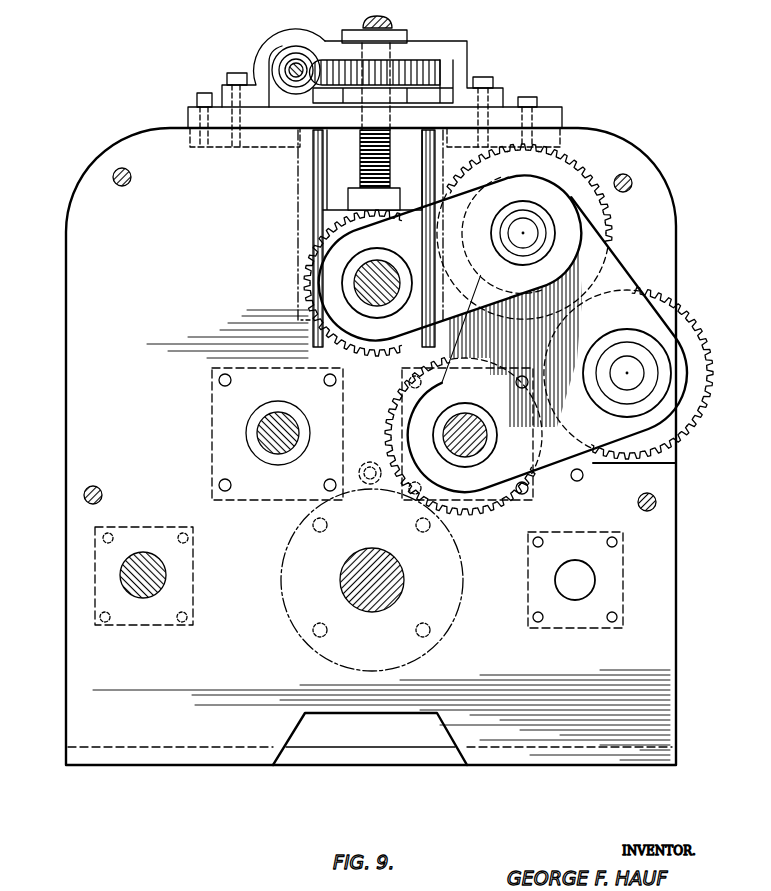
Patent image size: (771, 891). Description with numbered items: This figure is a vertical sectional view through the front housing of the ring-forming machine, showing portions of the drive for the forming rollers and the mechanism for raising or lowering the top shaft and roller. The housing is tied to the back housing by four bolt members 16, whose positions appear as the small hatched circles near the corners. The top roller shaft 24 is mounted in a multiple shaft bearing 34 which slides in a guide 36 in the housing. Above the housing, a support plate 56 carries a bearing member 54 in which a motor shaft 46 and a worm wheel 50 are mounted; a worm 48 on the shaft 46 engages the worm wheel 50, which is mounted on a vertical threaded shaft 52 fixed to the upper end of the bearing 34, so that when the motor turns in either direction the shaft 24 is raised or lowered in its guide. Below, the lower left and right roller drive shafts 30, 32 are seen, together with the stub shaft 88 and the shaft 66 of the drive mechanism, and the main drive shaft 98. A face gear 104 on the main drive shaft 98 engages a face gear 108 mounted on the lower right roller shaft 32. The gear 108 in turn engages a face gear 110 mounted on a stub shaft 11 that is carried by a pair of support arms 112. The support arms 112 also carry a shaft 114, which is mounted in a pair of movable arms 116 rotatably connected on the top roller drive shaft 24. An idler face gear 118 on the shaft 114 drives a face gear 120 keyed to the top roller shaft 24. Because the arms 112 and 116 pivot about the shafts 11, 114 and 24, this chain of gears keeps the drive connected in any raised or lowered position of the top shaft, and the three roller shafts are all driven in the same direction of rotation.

The stub shaft 11 is at (612, 371).
The bolt members 16 is at (120, 186).
The top roller shaft 24 is at (376, 268).
The drive shaft 30 is at (273, 453).
The drive shaft 32 is at (467, 452).
The shaft bearing 34 is at (338, 209).
The guide 36 is at (316, 183).
The motor shaft 46 is at (272, 63).
The worm 48 is at (282, 52).
The worm wheel 50 is at (433, 61).
The vertical threaded shaft 52 is at (392, 22).
The bearing member 54 is at (466, 64).
The support plate 56 is at (563, 120).
The shaft 66 is at (588, 580).
The stub shaft 88 is at (142, 598).
The main drive shaft 98 is at (394, 588).
The face gear 104 is at (440, 647).
The face gear 108 is at (470, 522).
The face gear 110 is at (683, 428).
The support arms 112 is at (620, 277).
The shaft 114 is at (522, 227).
The movable arms 116 is at (550, 193).
The idler face gear 118 is at (610, 223).
The face gear 120 is at (305, 277).